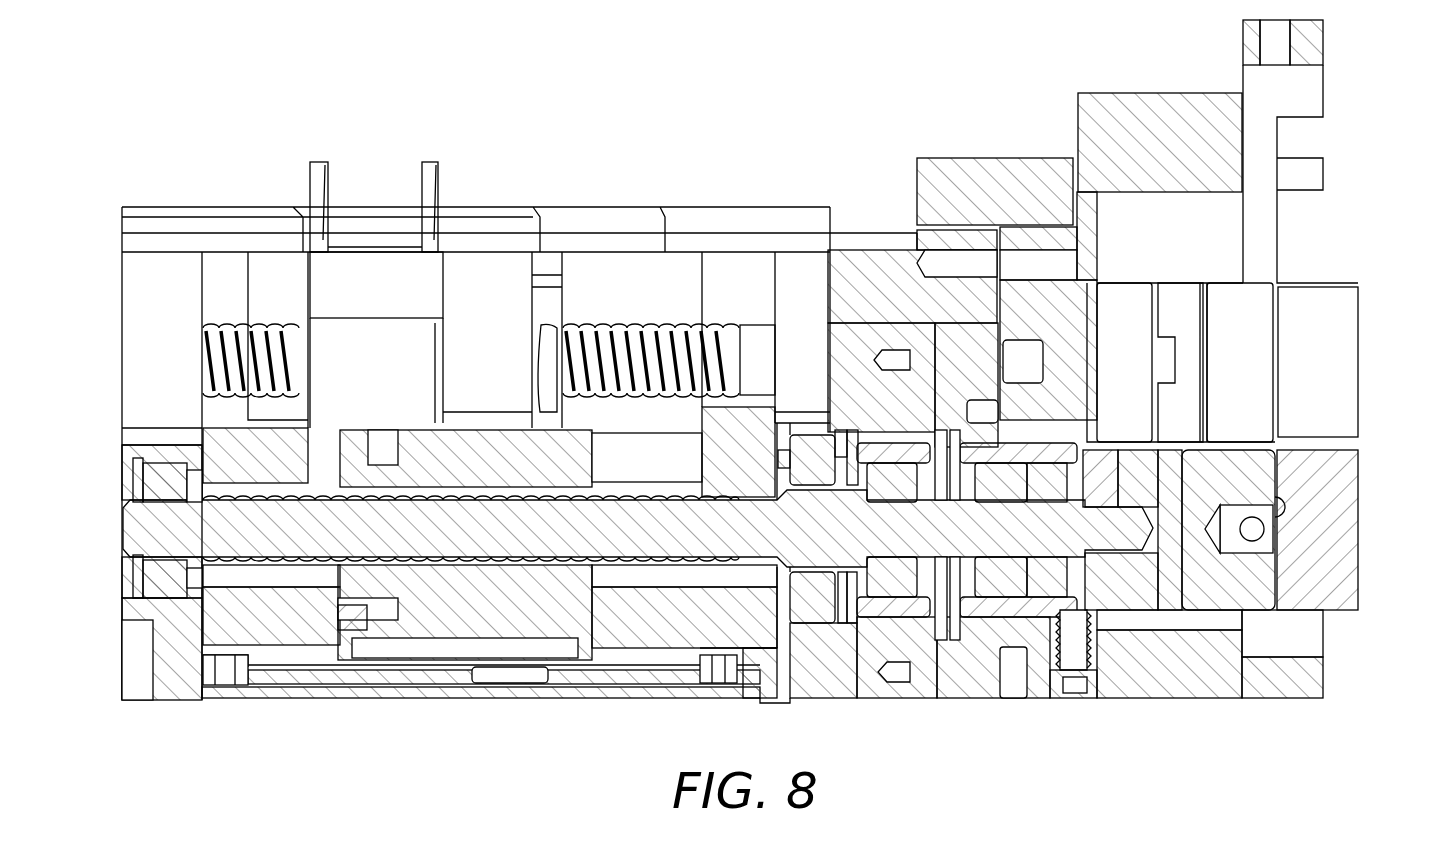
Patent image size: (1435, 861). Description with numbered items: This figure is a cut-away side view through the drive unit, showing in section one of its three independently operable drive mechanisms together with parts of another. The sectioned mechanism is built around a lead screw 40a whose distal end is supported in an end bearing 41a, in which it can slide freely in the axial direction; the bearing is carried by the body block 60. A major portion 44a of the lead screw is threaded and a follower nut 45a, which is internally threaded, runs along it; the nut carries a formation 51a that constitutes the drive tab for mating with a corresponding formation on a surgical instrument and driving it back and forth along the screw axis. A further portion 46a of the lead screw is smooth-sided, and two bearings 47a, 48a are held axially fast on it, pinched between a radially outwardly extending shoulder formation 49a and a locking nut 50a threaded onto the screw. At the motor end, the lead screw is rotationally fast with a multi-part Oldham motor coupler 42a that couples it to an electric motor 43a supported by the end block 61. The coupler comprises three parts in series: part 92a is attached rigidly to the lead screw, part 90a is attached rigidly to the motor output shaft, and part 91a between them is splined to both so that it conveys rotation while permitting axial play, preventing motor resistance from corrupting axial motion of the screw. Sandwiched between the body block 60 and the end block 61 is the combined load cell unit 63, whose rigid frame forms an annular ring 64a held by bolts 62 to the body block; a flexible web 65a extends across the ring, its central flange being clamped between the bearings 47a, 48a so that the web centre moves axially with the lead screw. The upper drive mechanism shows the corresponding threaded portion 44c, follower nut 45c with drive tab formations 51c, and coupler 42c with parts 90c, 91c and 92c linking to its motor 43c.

The body block 60 is at (133, 283).
The end block 61 is at (1182, 102).
The bolt 62 is at (887, 355).
The combined load cell unit 63 is at (952, 705).
The annular ring 64a is at (953, 390).
The web 65a is at (942, 450).
The lead screw 40a is at (150, 578).
The end bearing 41a is at (150, 486).
The motor coupler 42a is at (1200, 600).
The motor coupler 42c is at (1122, 302).
The electric motor 43a is at (1352, 584).
The electric motor 43c is at (1355, 293).
The threaded portion 44a is at (295, 545).
The threaded portion 44c is at (633, 337).
The follower nut 45a is at (438, 605).
The follower nut 45c is at (375, 355).
The smooth-sided portion 46a is at (912, 540).
The bearing 47a is at (880, 592).
The bearing 48a is at (1000, 578).
The shoulder formation 49a is at (850, 577).
The locking nut 50a is at (1060, 566).
The drive tab formation 51a is at (548, 333).
The drive tab formation 51c is at (318, 176).
The coupler part 90a is at (1250, 598).
The coupler part 90c is at (1262, 398).
The coupler part 91a is at (1175, 480).
The coupler part 91c is at (1172, 302).
The coupler part 92a is at (1120, 598).
The coupler part 92c is at (1122, 345).